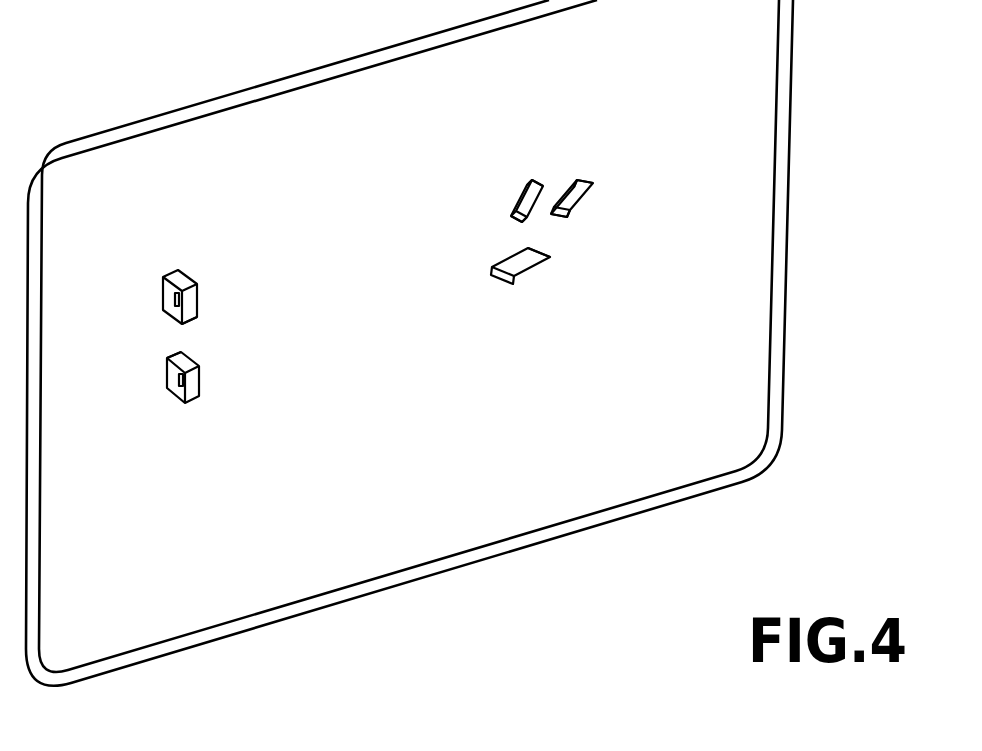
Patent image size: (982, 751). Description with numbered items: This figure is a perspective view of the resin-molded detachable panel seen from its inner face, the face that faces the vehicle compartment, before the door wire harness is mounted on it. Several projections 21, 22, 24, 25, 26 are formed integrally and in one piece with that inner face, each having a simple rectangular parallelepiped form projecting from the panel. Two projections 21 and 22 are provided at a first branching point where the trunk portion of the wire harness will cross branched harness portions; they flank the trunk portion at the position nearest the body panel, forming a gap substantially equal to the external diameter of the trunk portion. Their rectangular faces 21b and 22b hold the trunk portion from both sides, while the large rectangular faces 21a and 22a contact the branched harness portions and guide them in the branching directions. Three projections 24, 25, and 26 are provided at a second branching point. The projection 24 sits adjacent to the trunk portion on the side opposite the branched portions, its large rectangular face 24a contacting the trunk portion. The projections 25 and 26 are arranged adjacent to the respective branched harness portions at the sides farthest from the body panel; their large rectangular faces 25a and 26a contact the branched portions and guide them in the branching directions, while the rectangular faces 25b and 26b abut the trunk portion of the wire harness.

The projection 21 is at (162, 293).
The large rectangular face 21a is at (198, 292).
The rectangular face 21b is at (182, 334).
The projection 22 is at (166, 381).
The large rectangular face 22a is at (200, 387).
The rectangular face 22b is at (170, 356).
The projection 24 is at (533, 276).
The large rectangular face 24a is at (516, 260).
The projection 25 is at (531, 180).
The large rectangular face 25a is at (516, 198).
The rectangular face 25b is at (526, 221).
The projection 26 is at (586, 181).
The large rectangular face 26a is at (566, 181).
The rectangular face 26b is at (563, 219).